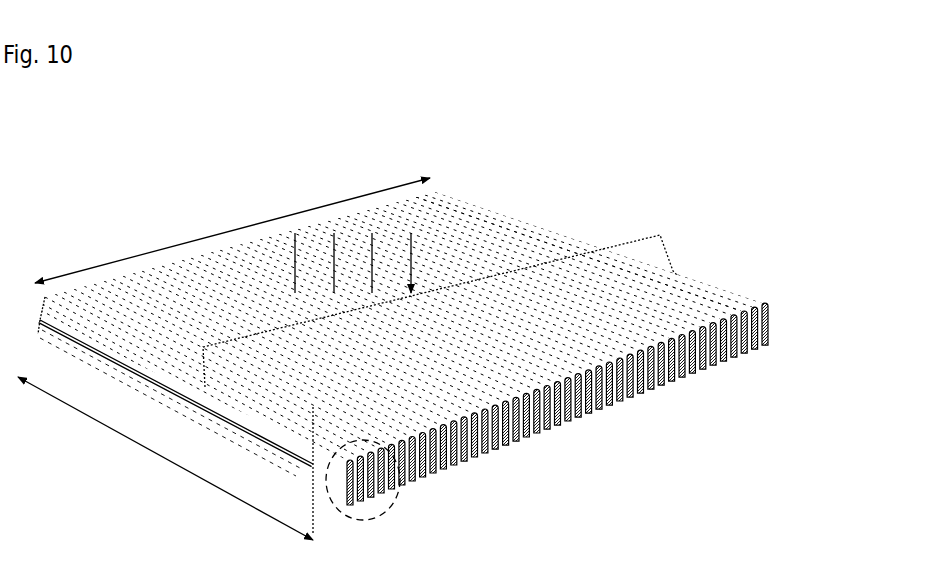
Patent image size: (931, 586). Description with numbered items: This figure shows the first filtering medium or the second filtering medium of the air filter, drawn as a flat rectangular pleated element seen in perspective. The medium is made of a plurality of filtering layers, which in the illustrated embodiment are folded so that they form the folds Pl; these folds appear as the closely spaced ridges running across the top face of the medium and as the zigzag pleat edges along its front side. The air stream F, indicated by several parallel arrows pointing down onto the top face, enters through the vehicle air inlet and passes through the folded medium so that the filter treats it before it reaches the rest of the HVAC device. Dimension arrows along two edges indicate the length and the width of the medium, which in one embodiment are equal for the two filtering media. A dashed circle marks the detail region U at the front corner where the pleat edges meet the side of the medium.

The air stream F is at (353, 246).
The folds Pl is at (430, 290).
The detail region of pleat edge U is at (326, 474).